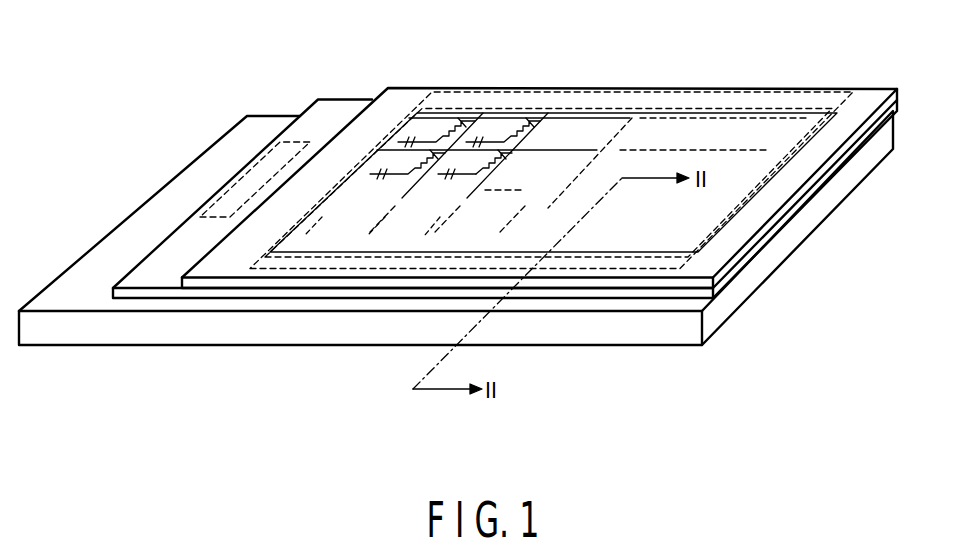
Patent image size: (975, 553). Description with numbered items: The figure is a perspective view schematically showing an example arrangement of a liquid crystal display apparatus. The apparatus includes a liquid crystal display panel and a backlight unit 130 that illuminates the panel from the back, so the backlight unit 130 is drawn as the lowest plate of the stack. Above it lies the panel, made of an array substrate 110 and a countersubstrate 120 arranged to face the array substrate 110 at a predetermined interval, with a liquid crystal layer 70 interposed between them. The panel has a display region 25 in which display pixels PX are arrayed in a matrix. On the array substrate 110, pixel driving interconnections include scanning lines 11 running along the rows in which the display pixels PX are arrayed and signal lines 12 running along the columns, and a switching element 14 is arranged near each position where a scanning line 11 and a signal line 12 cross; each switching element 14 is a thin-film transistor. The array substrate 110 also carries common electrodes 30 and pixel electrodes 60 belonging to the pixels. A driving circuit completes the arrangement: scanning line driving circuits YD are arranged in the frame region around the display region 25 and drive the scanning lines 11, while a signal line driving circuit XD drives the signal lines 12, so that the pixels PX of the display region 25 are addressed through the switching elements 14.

The scanning line 11 is at (468, 130).
The signal line 12 is at (590, 150).
The switching element 14 is at (506, 172).
The display region 25 is at (792, 142).
The common electrode 30 is at (418, 184).
The pixel electrode 60 is at (450, 176).
The liquid crystal layer 70 is at (448, 177).
The array substrate 110 is at (186, 232).
The countersubstrate 120 is at (361, 128).
The backlight unit 130 is at (235, 334).
The display pixel PX is at (441, 108).
The signal line driving circuit XD is at (290, 148).
The scanning line driving circuit YD is at (812, 100).